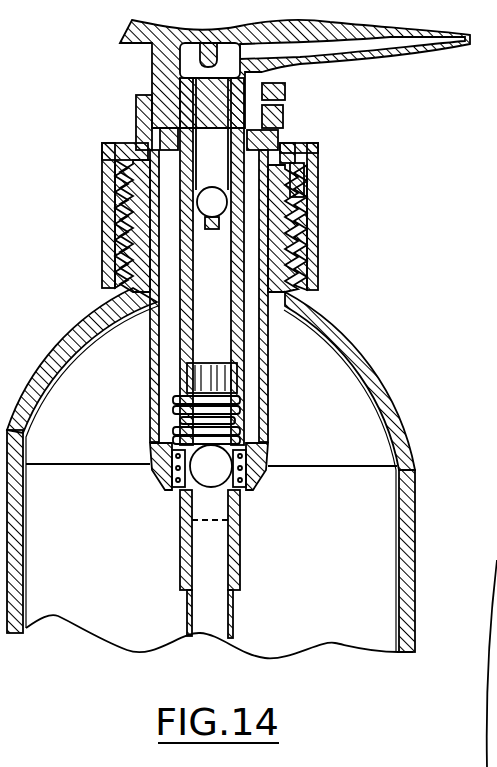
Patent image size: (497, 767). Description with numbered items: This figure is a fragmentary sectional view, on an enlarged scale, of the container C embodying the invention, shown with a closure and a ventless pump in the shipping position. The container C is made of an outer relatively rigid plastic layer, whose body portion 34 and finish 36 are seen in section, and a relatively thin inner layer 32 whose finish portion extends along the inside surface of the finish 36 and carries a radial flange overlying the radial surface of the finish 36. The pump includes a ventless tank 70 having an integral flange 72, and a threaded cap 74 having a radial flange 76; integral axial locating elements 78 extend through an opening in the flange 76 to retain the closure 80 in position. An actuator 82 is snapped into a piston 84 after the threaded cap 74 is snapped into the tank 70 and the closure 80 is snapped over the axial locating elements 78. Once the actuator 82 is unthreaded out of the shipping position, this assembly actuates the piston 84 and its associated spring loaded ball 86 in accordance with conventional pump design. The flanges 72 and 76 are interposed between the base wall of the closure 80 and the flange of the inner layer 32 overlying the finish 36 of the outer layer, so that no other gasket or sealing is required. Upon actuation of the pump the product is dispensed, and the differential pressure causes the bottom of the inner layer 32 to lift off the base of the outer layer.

The container C is at (62, 300).
The inner layer 32 is at (380, 403).
The body portion 34 is at (413, 422).
The finish 36 is at (297, 273).
The ventless tank 70 is at (175, 372).
The integral flange 72 is at (138, 147).
The threaded cap 74 is at (278, 102).
The radial flange 76 is at (315, 148).
The axial locating elements 78 is at (282, 122).
The closure 80 is at (305, 180).
The actuator 82 is at (152, 74).
The piston 84 is at (166, 320).
The spring loaded ball 86 is at (188, 490).